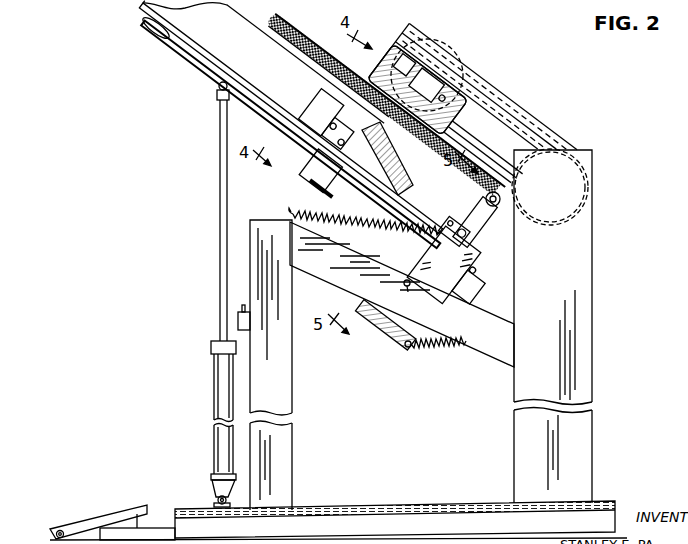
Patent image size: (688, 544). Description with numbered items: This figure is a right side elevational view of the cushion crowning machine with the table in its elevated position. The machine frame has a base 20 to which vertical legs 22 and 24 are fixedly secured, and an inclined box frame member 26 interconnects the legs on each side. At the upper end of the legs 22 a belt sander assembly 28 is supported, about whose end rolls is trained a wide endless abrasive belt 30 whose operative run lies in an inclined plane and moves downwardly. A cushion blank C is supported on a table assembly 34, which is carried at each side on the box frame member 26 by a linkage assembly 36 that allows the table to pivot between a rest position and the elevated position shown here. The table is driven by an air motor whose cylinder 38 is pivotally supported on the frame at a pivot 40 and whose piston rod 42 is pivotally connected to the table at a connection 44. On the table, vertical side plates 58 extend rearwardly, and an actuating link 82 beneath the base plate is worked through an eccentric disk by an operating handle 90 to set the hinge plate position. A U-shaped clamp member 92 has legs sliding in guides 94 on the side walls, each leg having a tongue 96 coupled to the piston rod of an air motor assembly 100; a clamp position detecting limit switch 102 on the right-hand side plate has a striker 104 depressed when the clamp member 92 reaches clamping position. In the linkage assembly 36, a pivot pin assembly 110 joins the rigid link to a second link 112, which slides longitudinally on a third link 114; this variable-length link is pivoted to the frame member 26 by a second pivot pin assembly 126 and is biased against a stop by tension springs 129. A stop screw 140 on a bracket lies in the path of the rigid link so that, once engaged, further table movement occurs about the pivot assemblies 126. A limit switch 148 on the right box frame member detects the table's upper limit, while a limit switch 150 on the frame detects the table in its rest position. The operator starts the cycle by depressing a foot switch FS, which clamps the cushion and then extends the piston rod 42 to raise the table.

The base 20 is at (423, 503).
The vertical leg 22 is at (526, 444).
The vertical leg 24 is at (290, 445).
The inclined box frame member 26 is at (370, 298).
The belt sander assembly 28 is at (532, 108).
The endless abrasive belt 30 is at (440, 134).
The table assembly 34 is at (226, 55).
The linkage assembly 36 is at (484, 260).
The cylinder 38 is at (216, 390).
The pivotal support 40 is at (218, 496).
The piston rod 42 is at (220, 224).
The pivotal connection 44 is at (219, 89).
The side plate 58 is at (278, 74).
The actuating link 82 is at (256, 115).
The operating handle 90 is at (145, 30).
The clamp member 92 is at (370, 95).
The guide 94 is at (378, 156).
The tongue 96 is at (352, 136).
The air motor assembly 100 is at (302, 188).
The clamp position detecting limit switch 102 is at (309, 107).
The striker 104 is at (305, 164).
The pivot pin assembly 110 is at (500, 208).
The second link 112 is at (486, 231).
The third link 114 is at (446, 274).
The second pivot pin assembly 126 is at (408, 288).
The tension spring 129 is at (368, 234).
The stop screw 140 is at (440, 222).
The limit switch 148 is at (470, 298).
The limit switch 150 is at (240, 314).
The cushion blank C is at (293, 42).
The foot switch FS is at (118, 510).